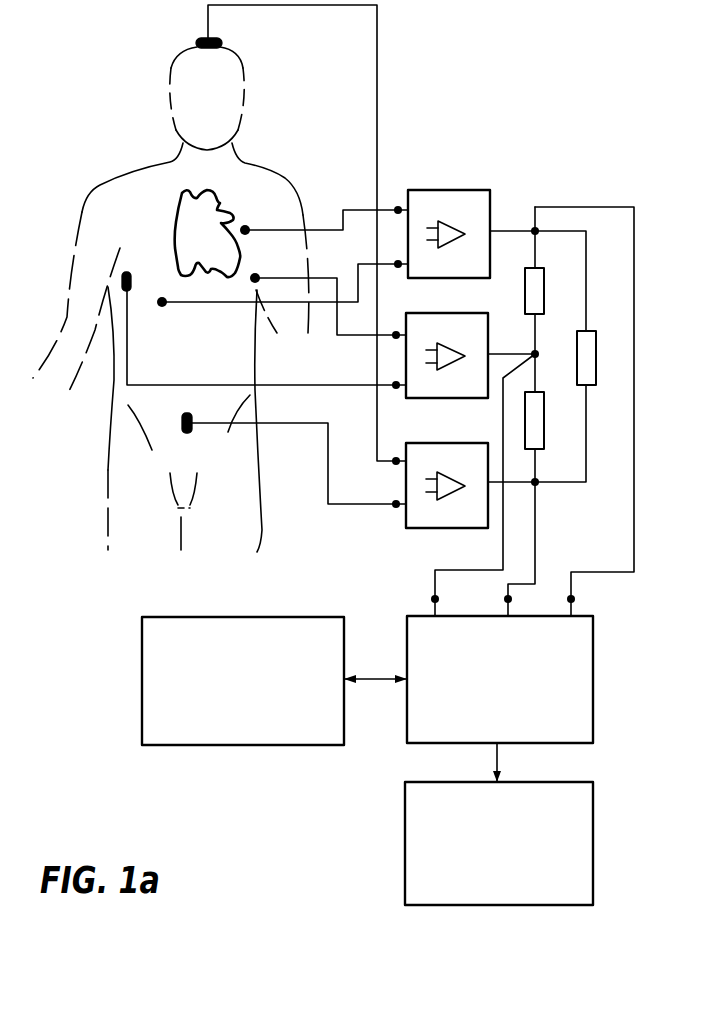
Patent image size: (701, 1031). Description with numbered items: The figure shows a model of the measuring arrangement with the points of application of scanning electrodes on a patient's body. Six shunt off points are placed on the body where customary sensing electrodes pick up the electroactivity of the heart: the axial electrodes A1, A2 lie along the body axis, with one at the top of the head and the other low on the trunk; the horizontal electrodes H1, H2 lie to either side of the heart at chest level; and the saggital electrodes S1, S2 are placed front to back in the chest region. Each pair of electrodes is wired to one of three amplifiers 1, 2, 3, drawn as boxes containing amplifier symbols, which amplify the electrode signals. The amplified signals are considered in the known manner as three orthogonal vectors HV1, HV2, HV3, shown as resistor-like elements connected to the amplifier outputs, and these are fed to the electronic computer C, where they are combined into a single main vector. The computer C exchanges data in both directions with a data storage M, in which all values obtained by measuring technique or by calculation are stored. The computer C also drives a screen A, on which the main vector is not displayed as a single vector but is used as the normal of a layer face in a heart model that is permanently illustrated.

The axial electrode A1 is at (220, 37).
The axial electrode A2 is at (191, 432).
The horizontal electrode H1 is at (143, 264).
The horizontal electrode H2 is at (258, 274).
The saggital electrode S1 is at (163, 307).
The saggital electrode S2 is at (248, 226).
The amplifier 1 is at (463, 193).
The amplifier 2 is at (468, 317).
The amplifier 3 is at (478, 420).
The orthogonal vector HV1 is at (557, 295).
The orthogonal vector HV2 is at (620, 335).
The orthogonal vector HV3 is at (544, 430).
The data storage M is at (232, 735).
The computer C is at (593, 719).
The screen A is at (585, 818).